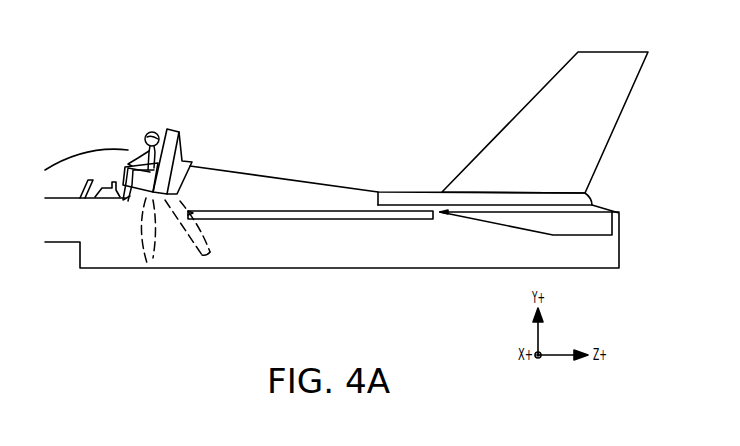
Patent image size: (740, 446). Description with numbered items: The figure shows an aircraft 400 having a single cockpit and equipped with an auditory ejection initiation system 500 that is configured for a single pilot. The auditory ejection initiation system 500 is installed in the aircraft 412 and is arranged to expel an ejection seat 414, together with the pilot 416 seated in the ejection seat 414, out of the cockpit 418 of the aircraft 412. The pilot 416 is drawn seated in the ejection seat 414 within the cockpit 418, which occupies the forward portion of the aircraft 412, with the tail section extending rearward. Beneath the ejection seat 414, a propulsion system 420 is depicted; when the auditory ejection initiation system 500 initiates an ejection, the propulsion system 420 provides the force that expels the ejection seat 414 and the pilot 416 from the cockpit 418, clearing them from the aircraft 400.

The aircraft 400 is at (284, 104).
The aircraft 412 is at (365, 250).
The ejection seat 414 is at (186, 136).
The pilot 416 is at (143, 133).
The cockpit 418 is at (77, 186).
The propulsion system 420 is at (145, 233).
The auditory ejection initiation system 500 is at (171, 159).